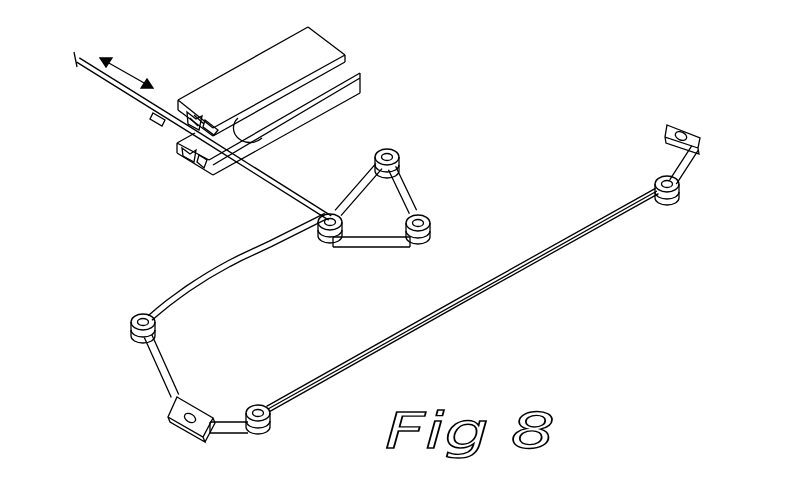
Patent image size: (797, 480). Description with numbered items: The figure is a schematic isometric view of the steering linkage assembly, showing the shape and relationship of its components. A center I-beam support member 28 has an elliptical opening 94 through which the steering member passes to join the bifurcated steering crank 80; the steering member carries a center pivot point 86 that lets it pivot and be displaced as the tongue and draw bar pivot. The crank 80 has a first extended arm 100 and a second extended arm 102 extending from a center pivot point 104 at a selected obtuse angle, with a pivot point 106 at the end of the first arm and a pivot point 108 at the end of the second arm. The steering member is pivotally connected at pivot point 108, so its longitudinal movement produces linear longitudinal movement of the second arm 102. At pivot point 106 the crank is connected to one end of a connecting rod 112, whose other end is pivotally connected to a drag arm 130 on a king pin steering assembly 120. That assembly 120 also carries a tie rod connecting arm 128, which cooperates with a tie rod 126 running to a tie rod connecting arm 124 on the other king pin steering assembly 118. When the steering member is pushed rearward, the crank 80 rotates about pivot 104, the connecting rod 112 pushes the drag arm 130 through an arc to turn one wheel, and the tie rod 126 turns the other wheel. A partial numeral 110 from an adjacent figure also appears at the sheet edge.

The center "I" beam support member 28 is at (238, 68).
The bifurcated steering crank 80 is at (455, 148).
The center pivot point 86 is at (157, 121).
The elliptical shape opening 94 is at (250, 140).
The first extended arm 100 is at (417, 197).
The second extended arm 102 is at (365, 250).
The center pivot point 104 is at (432, 228).
The pivot point 106 is at (400, 152).
The pivot point 108 is at (312, 248).
The reference from adjacent figure 110 is at (39, 11).
The connecting rod 112 is at (235, 252).
The king pin steering assembly 118 is at (685, 124).
The king pin steering assembly 120 is at (197, 397).
The tie rod connecting arm 124 is at (686, 195).
The tie rod 126 is at (430, 324).
The tie rod connecting arm 128 is at (232, 417).
The drag arm 130 is at (157, 373).